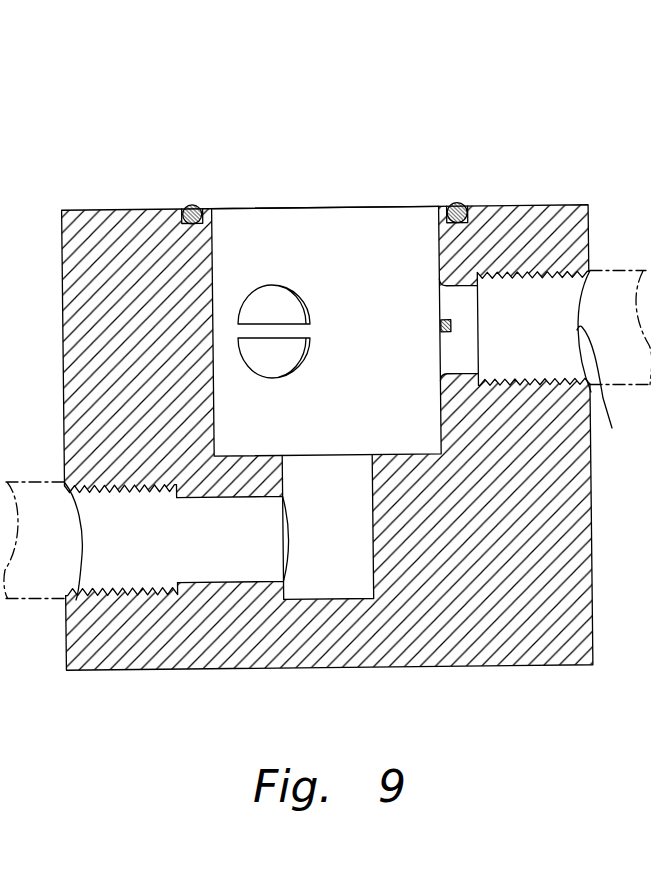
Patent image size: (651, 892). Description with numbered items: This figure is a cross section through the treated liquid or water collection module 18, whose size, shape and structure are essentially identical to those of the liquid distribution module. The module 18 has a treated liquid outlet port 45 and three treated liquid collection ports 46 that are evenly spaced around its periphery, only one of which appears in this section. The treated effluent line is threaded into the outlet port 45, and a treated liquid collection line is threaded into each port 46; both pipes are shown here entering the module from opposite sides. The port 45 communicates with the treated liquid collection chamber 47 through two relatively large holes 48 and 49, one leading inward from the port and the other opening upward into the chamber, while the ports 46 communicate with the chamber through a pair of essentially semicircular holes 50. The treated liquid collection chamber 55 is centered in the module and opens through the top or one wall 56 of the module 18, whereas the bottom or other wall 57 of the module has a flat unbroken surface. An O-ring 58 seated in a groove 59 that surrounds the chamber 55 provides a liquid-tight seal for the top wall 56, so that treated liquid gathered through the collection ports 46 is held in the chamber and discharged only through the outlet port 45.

The treated liquid collection module 18 is at (561, 160).
The treated liquid outlet port 45 is at (78, 552).
The treated liquid collection ports 46 is at (605, 405).
The treated liquid collection chamber 47 is at (338, 443).
The hole 48 is at (243, 553).
The hole 49 is at (352, 543).
The semicircular holes 50 is at (300, 311).
The treated liquid collection chamber 55 is at (386, 244).
The top wall 56 is at (500, 204).
The bottom wall 57 is at (520, 667).
The O-ring 58 is at (191, 203).
The groove 59 is at (182, 207).